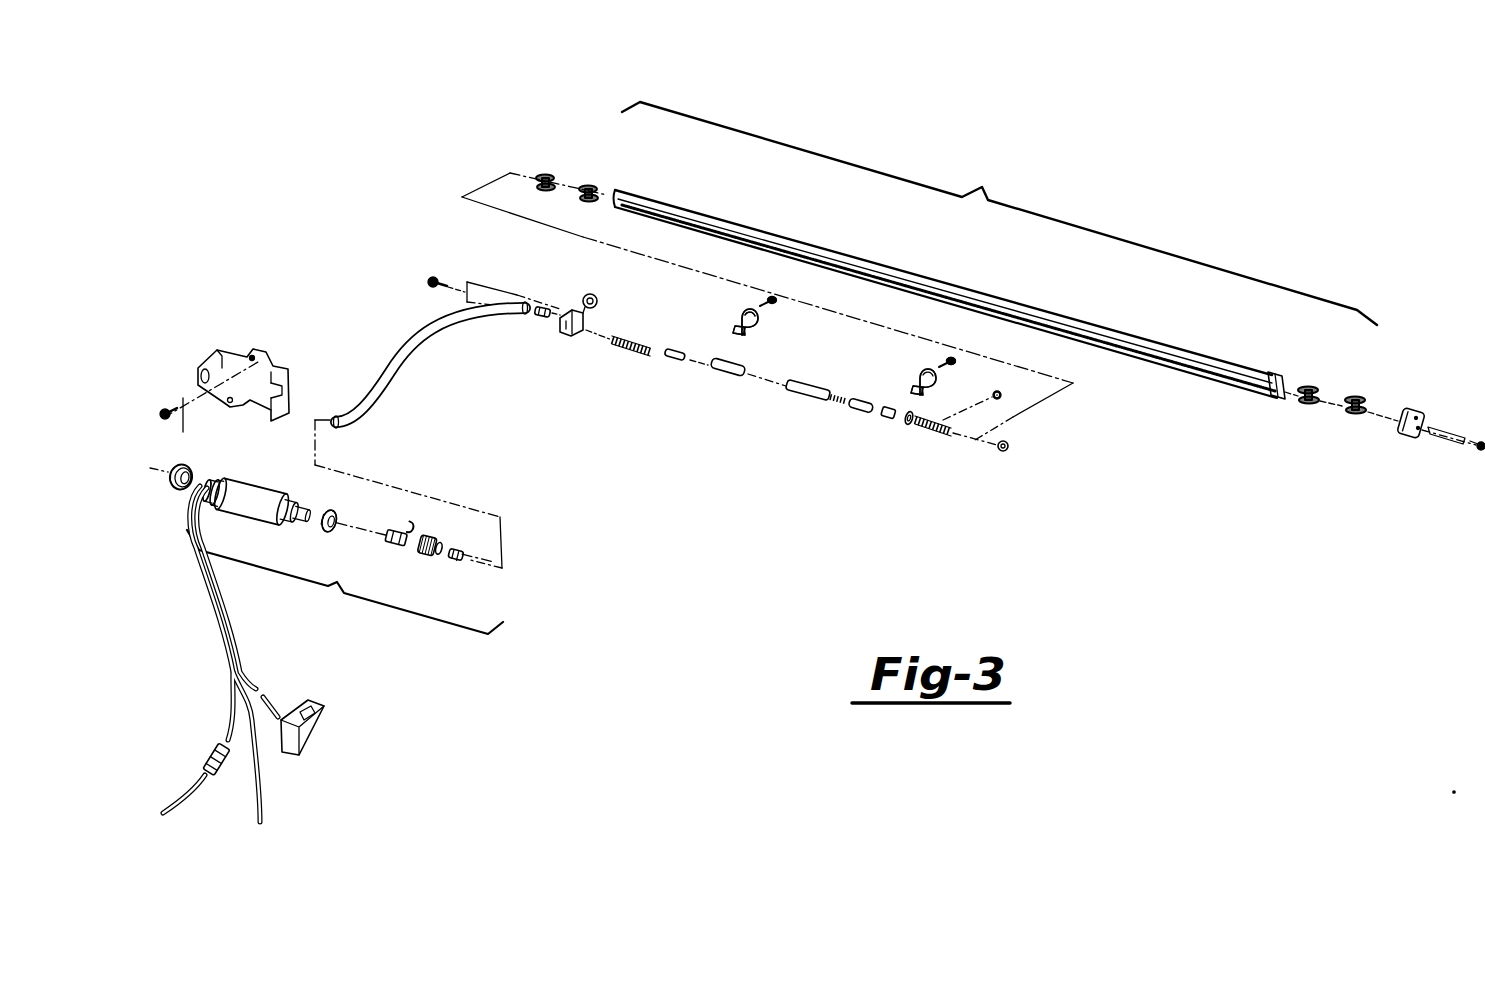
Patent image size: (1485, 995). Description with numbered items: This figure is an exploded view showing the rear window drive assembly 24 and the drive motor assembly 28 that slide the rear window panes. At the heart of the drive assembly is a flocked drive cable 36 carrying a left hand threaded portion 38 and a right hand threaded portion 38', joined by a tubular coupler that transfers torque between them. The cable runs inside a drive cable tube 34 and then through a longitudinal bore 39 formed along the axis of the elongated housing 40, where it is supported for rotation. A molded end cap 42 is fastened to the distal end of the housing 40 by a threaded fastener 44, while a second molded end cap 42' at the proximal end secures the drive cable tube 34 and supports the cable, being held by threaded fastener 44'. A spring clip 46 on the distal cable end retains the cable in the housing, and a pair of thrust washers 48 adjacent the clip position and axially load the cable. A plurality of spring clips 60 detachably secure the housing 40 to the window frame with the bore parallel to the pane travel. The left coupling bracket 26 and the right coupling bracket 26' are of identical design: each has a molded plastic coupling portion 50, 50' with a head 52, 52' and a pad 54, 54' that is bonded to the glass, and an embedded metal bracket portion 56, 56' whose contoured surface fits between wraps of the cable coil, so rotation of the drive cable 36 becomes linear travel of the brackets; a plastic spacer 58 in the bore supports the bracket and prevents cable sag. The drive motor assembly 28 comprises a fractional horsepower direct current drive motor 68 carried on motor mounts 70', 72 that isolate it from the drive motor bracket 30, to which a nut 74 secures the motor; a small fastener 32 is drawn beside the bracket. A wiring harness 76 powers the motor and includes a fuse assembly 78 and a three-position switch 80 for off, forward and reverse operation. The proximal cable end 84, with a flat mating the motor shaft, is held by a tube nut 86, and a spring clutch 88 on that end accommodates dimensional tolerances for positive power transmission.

The rear window drive assembly 24 is at (999, 213).
The left coupling bracket 26 is at (895, 373).
The right coupling bracket 26' is at (697, 310).
The drive motor assembly 28 is at (345, 582).
The drive motor bracket 30 is at (265, 360).
The screw 32 is at (166, 408).
The drive cable tube 34 is at (428, 350).
The flocked drive cable 36 is at (539, 319).
The left hand threaded portion 38 is at (934, 450).
The right hand threaded portion 38' is at (617, 370).
The longitudinal bore 39 is at (1282, 388).
The housing 40 is at (915, 272).
The molded end cap 42 is at (1428, 398).
The molded end cap 42' is at (575, 291).
The threaded fastener 44 is at (1462, 474).
The threaded fastener 44' is at (418, 260).
The spring clip 46 is at (1002, 395).
The thrust washers 48 is at (910, 424).
The coupling portion 50 is at (900, 361).
The coupling portion 50' is at (697, 298).
The head 52 is at (1018, 316).
The head 52' is at (791, 328).
The pad 54 is at (990, 311).
The pad 54' is at (792, 244).
The metal bracket portion 56 is at (951, 382).
The metal bracket portion 56' is at (779, 348).
The plastic spacer 58 is at (882, 416).
The spring clips 60 is at (550, 178).
The drive motor 68 is at (275, 480).
The motor mount 70' is at (173, 538).
The motor mount 72 is at (312, 510).
The nut 74 is at (338, 516).
The wiring harness 76 is at (227, 634).
The fuse assembly 78 is at (208, 750).
The switch 80 is at (314, 708).
The proximal cable end 84 is at (399, 546).
The tube nut 86 is at (441, 542).
The spring clutch 88 is at (418, 523).